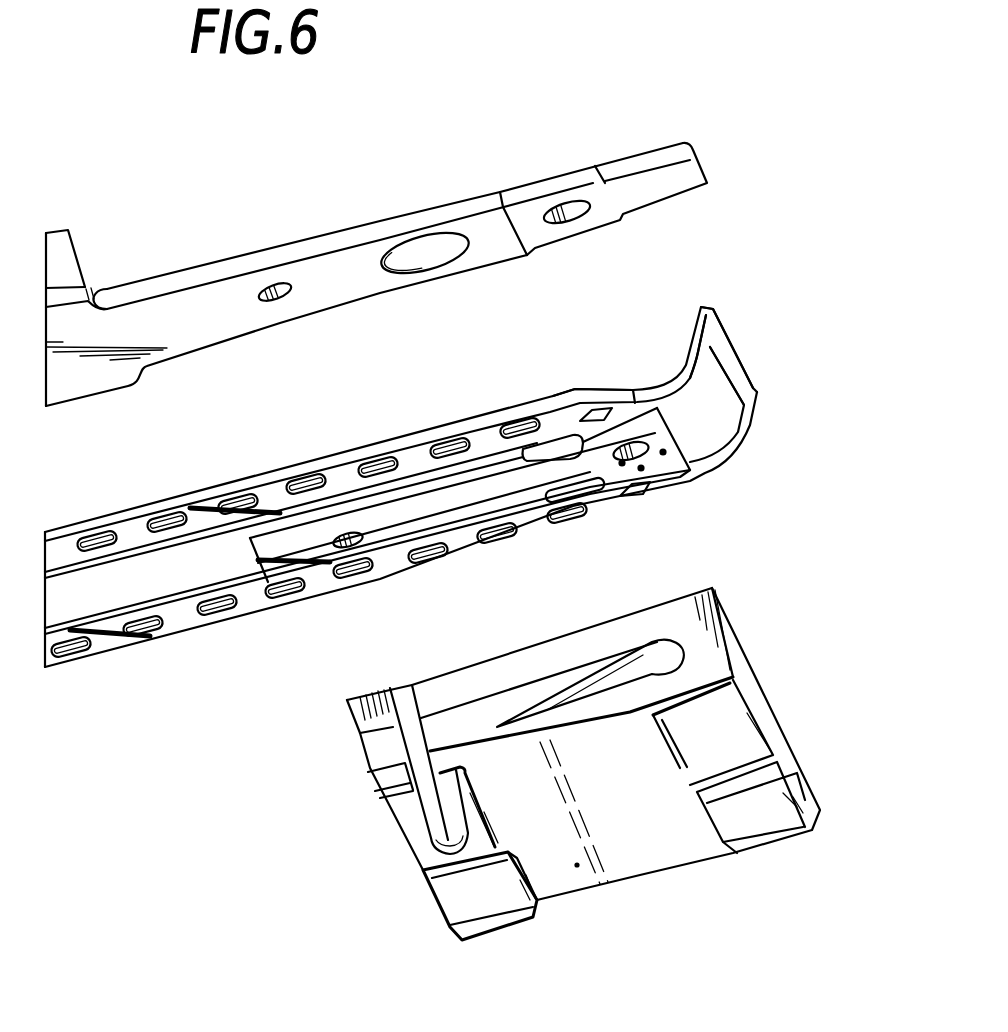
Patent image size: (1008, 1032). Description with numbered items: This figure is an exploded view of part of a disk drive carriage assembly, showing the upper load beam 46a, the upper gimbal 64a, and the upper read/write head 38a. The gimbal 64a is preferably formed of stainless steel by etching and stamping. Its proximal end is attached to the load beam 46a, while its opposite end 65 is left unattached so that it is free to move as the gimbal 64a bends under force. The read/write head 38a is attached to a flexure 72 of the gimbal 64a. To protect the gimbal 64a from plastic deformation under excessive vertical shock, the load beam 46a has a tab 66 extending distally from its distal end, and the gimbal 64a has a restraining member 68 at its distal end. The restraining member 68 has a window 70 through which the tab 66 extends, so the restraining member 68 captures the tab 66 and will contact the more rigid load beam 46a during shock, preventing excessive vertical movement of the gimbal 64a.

The upper load beam 46a is at (80, 257).
The tab 66 is at (700, 154).
The upper gimbal 64a is at (304, 462).
The end of the gimbal 65 is at (591, 395).
The restraining member 68 is at (728, 373).
The window 70 is at (717, 425).
The flexure 72 is at (460, 503).
The upper read/write head 38a is at (850, 667).